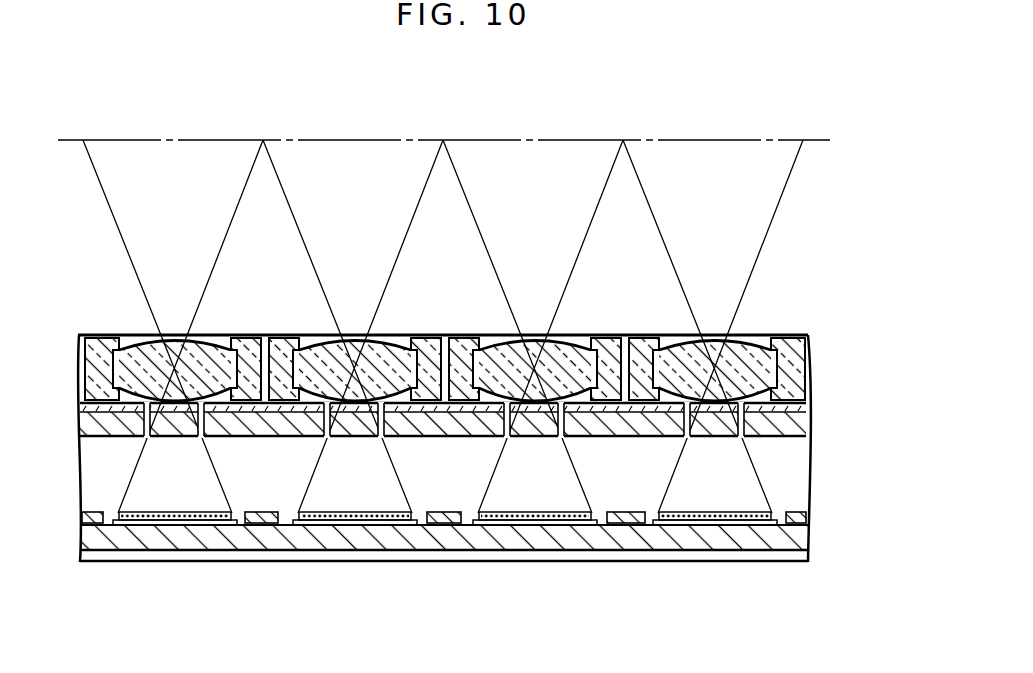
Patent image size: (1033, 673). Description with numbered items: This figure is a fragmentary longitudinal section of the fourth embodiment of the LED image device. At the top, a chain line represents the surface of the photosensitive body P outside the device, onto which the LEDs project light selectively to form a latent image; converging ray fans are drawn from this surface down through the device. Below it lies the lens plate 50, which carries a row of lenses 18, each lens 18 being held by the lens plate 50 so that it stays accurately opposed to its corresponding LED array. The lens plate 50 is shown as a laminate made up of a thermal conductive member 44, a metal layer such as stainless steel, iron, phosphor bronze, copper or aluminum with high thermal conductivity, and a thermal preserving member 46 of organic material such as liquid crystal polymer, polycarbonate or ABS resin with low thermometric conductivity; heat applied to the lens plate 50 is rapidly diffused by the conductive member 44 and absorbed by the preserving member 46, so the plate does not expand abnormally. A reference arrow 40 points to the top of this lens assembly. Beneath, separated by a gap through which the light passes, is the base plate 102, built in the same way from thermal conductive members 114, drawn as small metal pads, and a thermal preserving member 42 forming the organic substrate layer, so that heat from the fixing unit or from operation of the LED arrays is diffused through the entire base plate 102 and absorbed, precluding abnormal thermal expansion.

The photosensitive body P is at (488, 136).
The lens array plate 40 is at (474, 332).
The lens 18 is at (747, 378).
The thermal conductive member 44 is at (800, 405).
The thermal preserving member 46 is at (868, 393).
The lens plate 50 is at (498, 423).
The thermal conductive members 114 is at (708, 612).
The thermal preserving member 42 is at (718, 538).
The base plate 102 is at (444, 583).